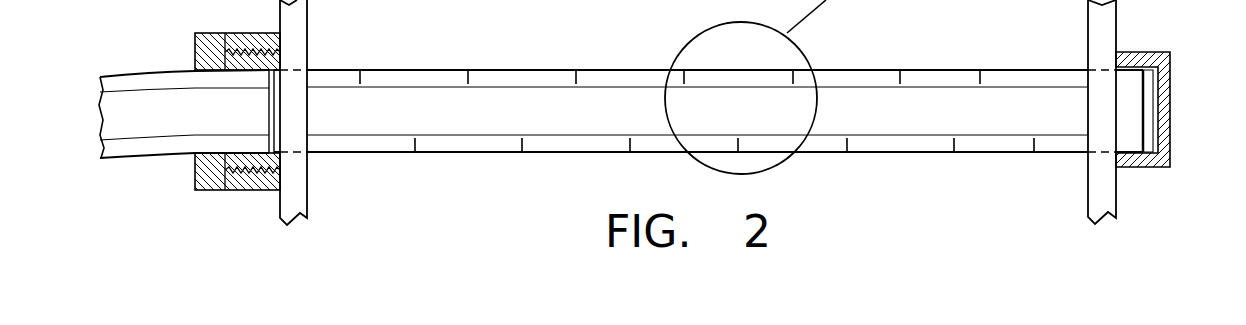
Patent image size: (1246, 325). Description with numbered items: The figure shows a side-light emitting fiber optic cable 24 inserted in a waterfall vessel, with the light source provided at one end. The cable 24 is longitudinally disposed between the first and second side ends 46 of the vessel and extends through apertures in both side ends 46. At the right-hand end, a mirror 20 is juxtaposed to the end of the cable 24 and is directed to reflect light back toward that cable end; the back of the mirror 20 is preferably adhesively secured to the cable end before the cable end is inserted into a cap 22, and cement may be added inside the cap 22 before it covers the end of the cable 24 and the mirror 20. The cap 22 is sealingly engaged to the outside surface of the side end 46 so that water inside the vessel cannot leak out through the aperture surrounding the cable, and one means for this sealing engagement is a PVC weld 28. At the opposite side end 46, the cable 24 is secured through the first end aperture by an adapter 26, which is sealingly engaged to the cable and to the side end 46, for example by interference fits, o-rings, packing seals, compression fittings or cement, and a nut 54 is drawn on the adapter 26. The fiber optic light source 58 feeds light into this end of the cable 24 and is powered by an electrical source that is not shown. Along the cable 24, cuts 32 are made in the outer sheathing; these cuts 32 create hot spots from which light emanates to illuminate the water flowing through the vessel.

The mirror 20 is at (1143, 107).
The end cap 22 is at (1148, 52).
The side-light emitting fiber optic cable 24 is at (903, 113).
The adapter 26 is at (247, 168).
The PVC weld 28 is at (308, 68).
The cuts 32 is at (415, 152).
The side ends 46 is at (292, 192).
The nut 54 is at (241, 33).
The fiber optic light source 58 is at (158, 72).